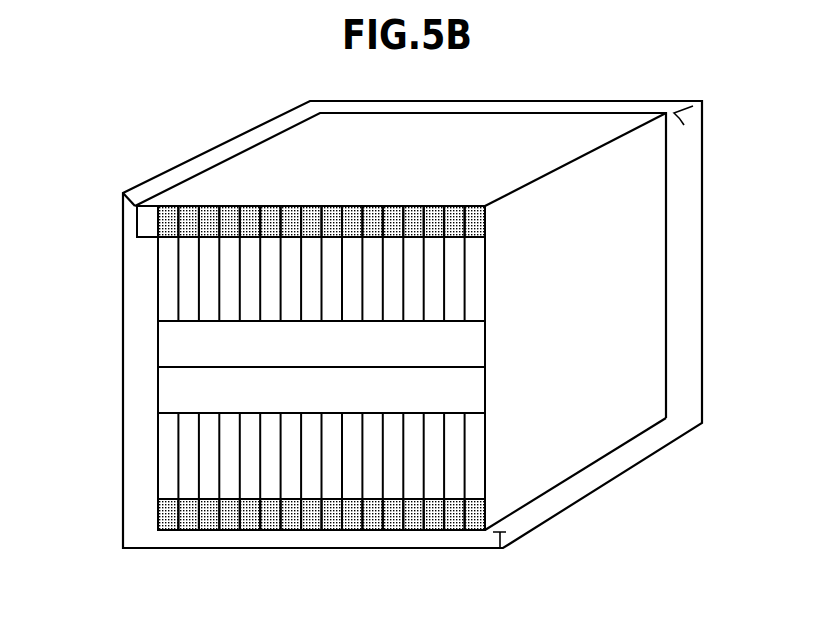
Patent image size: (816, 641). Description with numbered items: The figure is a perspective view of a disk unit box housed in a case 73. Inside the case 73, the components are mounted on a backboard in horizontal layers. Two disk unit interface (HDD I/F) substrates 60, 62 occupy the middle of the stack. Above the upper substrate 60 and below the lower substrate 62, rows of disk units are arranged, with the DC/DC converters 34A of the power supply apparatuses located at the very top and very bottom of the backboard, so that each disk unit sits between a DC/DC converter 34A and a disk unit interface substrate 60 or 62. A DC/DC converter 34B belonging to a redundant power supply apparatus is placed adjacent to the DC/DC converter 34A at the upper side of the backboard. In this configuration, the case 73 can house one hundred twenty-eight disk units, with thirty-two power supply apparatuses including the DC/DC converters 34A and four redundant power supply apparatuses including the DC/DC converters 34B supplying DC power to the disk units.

The case 73 is at (702, 272).
The DC/DC converter 34A is at (167, 207).
The DC/DC converter 34B is at (137, 225).
The disk unit interface substrate 60 is at (485, 343).
The disk unit interface substrate 62 is at (485, 389).